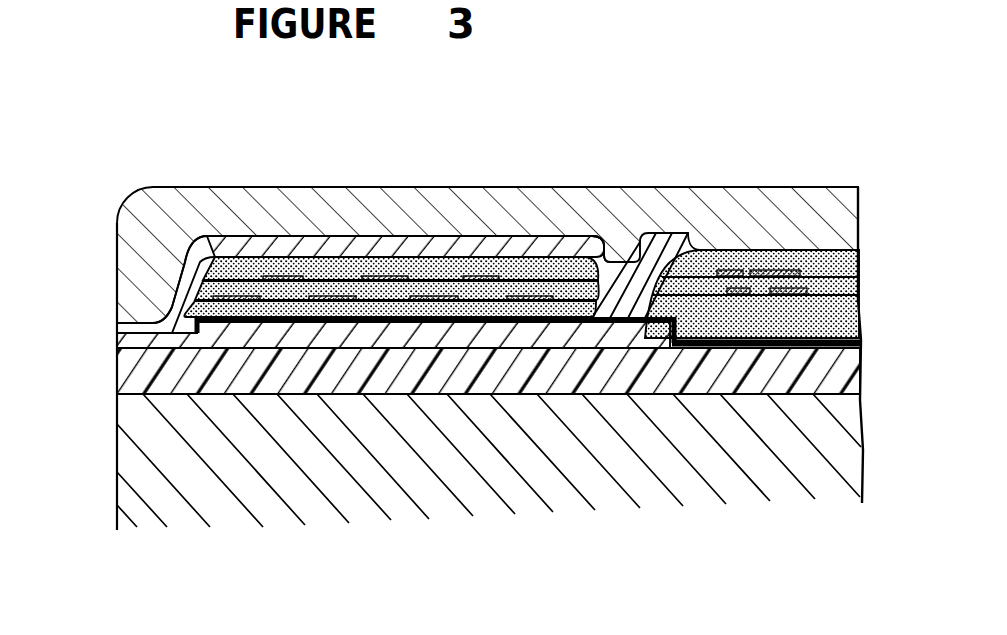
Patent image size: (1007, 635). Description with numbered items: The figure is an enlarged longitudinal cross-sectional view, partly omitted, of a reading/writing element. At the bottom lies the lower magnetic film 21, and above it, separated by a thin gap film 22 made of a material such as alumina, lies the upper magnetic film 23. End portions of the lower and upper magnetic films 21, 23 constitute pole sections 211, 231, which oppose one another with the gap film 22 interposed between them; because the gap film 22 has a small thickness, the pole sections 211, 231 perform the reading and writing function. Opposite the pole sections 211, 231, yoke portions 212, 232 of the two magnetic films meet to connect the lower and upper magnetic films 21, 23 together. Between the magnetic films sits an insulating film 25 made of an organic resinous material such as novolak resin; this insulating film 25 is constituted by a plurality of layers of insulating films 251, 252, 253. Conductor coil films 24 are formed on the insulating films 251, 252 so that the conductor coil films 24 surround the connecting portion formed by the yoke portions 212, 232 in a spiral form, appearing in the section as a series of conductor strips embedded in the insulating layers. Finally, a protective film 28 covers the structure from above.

The lower magnetic film 21 is at (380, 395).
The pole section 211 is at (120, 385).
The yoke portion 212 is at (617, 333).
The gap film 22 is at (147, 323).
The upper magnetic film 23 is at (390, 243).
The pole section 231 is at (117, 330).
The yoke portion 232 is at (602, 277).
The conductor coil films 24 is at (488, 272).
The insulating film 25 is at (860, 270).
The insulating film 251 is at (273, 322).
The insulating film 252 is at (203, 282).
The insulating film 253 is at (197, 292).
The protective film 28 is at (450, 213).